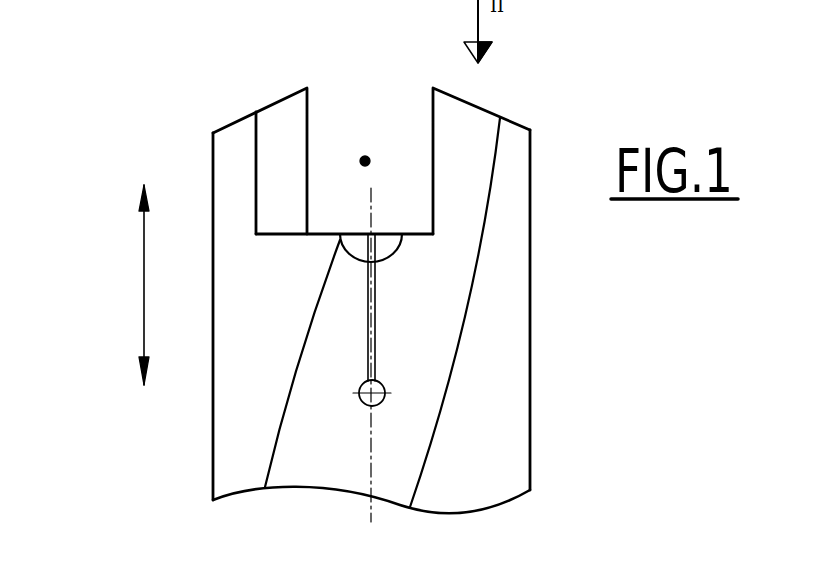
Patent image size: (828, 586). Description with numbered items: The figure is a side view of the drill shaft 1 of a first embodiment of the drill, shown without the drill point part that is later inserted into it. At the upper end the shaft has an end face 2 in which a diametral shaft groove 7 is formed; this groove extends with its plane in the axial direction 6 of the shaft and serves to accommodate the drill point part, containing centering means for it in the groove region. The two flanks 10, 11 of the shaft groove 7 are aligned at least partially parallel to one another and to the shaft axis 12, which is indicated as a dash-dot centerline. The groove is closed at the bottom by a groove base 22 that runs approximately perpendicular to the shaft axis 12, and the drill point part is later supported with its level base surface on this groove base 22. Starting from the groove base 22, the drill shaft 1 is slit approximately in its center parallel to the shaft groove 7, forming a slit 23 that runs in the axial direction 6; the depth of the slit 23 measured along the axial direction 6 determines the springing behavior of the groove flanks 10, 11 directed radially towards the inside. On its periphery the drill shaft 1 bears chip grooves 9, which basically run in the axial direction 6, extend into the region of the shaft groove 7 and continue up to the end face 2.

The drill shaft 1 is at (538, 399).
The end face 2 is at (274, 96).
The axial direction 6 is at (144, 295).
The shaft groove 7 is at (364, 154).
The chip grooves 9 is at (320, 432).
The groove flank 10 is at (264, 140).
The groove flank 11 is at (428, 147).
The shaft axis 12 is at (373, 508).
The groove base 22 is at (327, 232).
The slit 23 is at (377, 322).